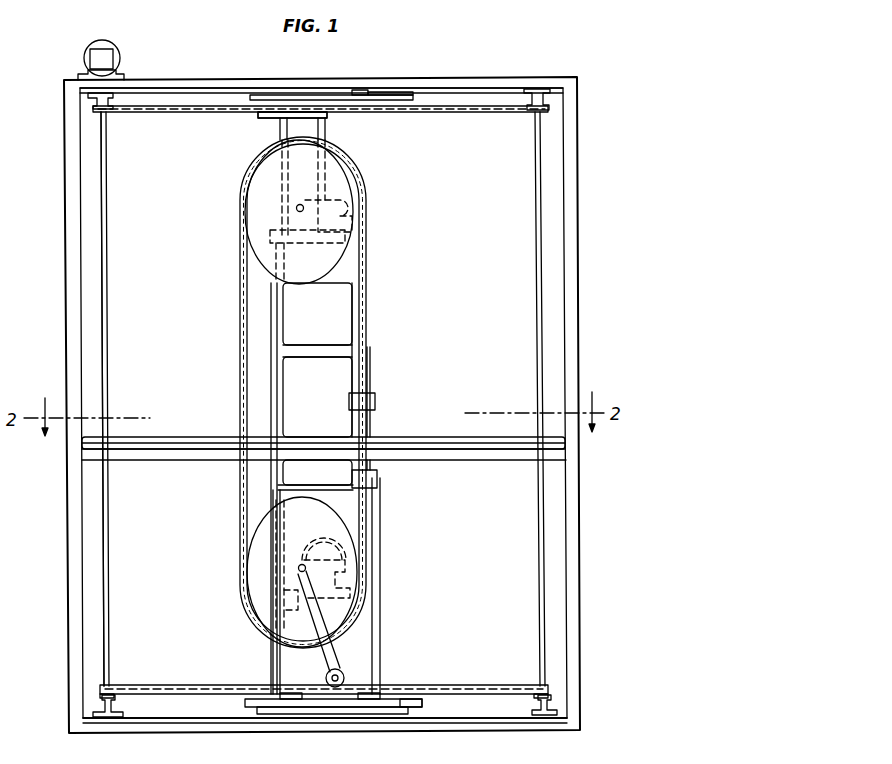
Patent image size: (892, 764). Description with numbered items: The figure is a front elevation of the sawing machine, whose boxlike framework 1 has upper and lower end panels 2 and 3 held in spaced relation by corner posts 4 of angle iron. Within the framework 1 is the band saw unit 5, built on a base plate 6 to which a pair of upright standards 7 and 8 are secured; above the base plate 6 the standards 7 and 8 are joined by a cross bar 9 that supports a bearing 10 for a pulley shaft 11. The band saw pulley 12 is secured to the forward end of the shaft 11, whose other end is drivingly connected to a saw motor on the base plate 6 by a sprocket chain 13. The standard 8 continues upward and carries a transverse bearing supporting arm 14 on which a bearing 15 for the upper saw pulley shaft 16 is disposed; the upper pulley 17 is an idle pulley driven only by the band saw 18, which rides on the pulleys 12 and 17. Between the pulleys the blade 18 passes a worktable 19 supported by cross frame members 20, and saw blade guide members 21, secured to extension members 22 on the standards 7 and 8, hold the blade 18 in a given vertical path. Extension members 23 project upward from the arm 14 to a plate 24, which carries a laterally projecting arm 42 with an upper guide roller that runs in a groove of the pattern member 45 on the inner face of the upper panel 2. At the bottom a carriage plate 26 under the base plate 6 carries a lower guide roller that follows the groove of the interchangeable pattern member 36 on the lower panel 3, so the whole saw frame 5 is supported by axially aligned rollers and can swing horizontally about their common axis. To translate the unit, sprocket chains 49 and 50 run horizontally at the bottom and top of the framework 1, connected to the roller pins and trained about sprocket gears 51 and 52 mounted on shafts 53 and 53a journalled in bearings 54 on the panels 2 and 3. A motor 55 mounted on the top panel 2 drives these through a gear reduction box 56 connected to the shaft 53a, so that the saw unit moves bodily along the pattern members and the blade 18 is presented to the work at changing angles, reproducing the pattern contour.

The framework 1 is at (586, 212).
The upper end panel 2 is at (447, 84).
The lower end panel 3 is at (493, 724).
The corner post 4 is at (66, 238).
The band saw unit 5 is at (380, 320).
The base plate 6 is at (416, 708).
The upright standard 7 is at (380, 604).
The upright standard 8 is at (276, 650).
The cross bar 9 is at (302, 612).
The bearing 10 is at (354, 572).
The pulley shaft 11 is at (302, 562).
The band saw pulley 12 is at (258, 540).
The sprocket chain 13 is at (358, 650).
The bearing supporting arm 14 is at (310, 250).
The bearing 15 is at (356, 212).
The upper saw pulley shaft 16 is at (296, 208).
The upper pulley 17 is at (258, 244).
The band saw 18 is at (244, 356).
The worktable 19 is at (430, 436).
The cross frame member 20 is at (468, 462).
The saw blade guide member 21 is at (376, 400).
The extension member 22 is at (304, 355).
The extension member 23 is at (292, 120).
The plate 24 is at (258, 113).
The carriage plate 26 is at (280, 708).
The pattern member 36 is at (204, 724).
The laterally projecting arm 42 is at (340, 114).
The pattern member 45 is at (300, 94).
The sprocket chain 49 is at (470, 688).
The sprocket chain 50 is at (463, 113).
The sprocket gear 51 is at (100, 690).
The sprocket gear 52 is at (100, 108).
The shaft 53 is at (538, 320).
The shaft 53a is at (108, 360).
The bearing 54 is at (104, 101).
The motor 55 is at (118, 50).
The gear reduction box 56 is at (90, 60).